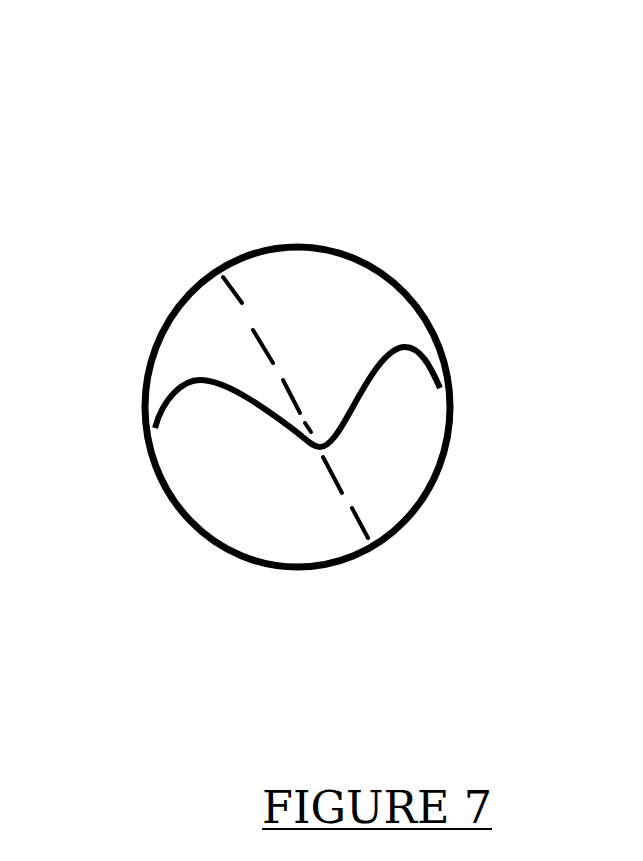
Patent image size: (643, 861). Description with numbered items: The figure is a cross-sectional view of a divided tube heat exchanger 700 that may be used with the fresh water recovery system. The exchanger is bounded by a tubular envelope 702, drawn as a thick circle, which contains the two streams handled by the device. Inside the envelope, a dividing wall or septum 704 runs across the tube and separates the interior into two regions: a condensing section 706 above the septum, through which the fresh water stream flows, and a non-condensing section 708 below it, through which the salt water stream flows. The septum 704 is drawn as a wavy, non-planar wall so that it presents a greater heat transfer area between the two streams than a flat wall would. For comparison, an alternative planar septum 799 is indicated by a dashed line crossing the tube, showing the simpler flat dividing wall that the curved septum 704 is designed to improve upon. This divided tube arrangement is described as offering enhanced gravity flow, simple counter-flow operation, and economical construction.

The divided tube heat exchanger 700 is at (462, 131).
The tubular envelope 702 is at (157, 340).
The dividing wall or septum 704 is at (340, 433).
The condensing section 706 is at (355, 318).
The non-condensing section 708 is at (305, 510).
The alternative planar septum 799 is at (262, 337).